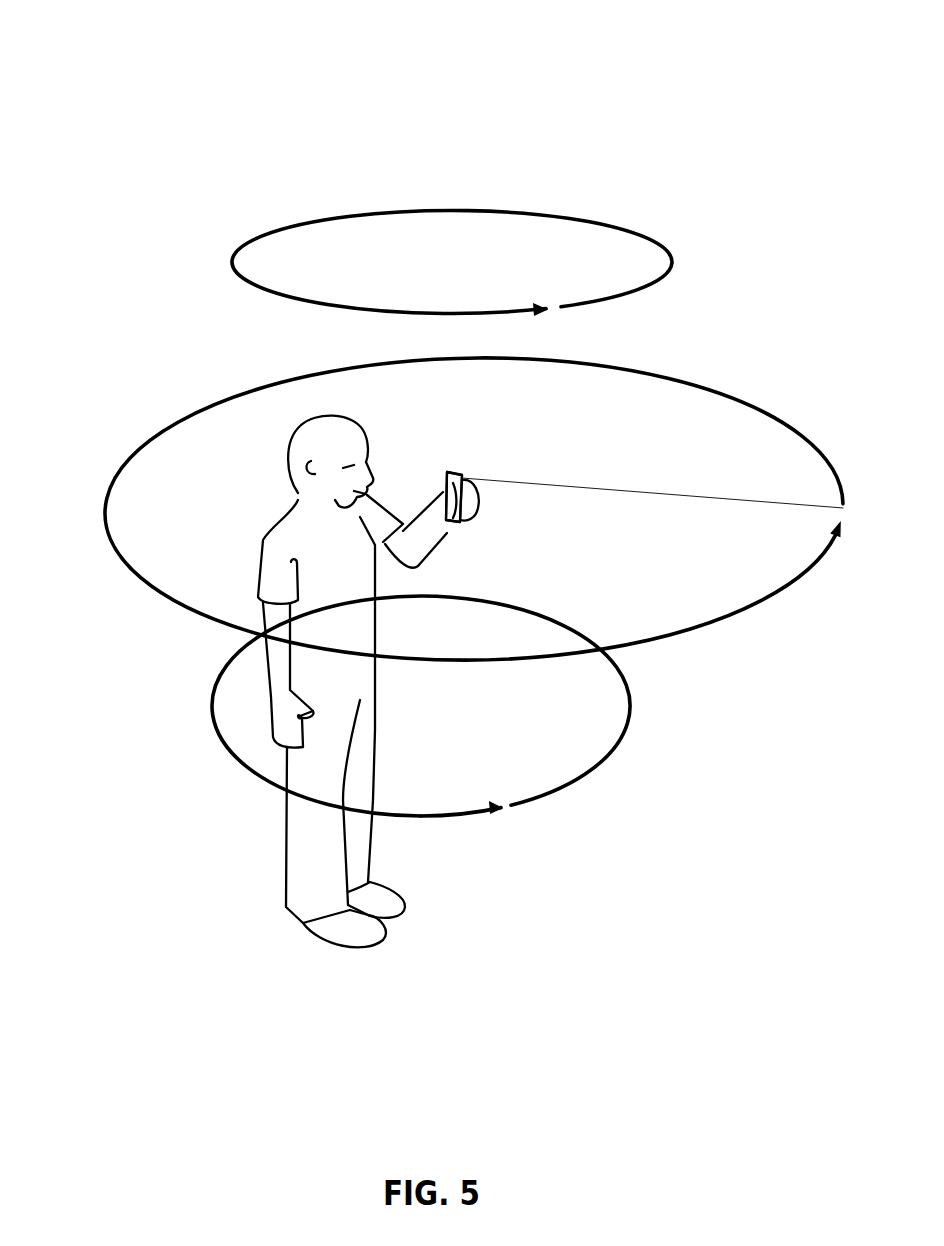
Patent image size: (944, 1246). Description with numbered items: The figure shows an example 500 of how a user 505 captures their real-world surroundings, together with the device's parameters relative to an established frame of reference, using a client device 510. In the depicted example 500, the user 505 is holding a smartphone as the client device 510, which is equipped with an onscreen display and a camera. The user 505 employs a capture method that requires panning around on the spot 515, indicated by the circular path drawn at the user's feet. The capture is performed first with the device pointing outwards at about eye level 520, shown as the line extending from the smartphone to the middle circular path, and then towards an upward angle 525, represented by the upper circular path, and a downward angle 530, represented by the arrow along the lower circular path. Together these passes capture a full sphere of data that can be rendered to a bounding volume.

The example 500 is at (136, 54).
The user 505 is at (296, 407).
The client device 510 is at (468, 459).
The spot 515 is at (650, 688).
The eye level 520 is at (667, 485).
The upward angle 525 is at (672, 237).
The downward angle 530 is at (580, 794).